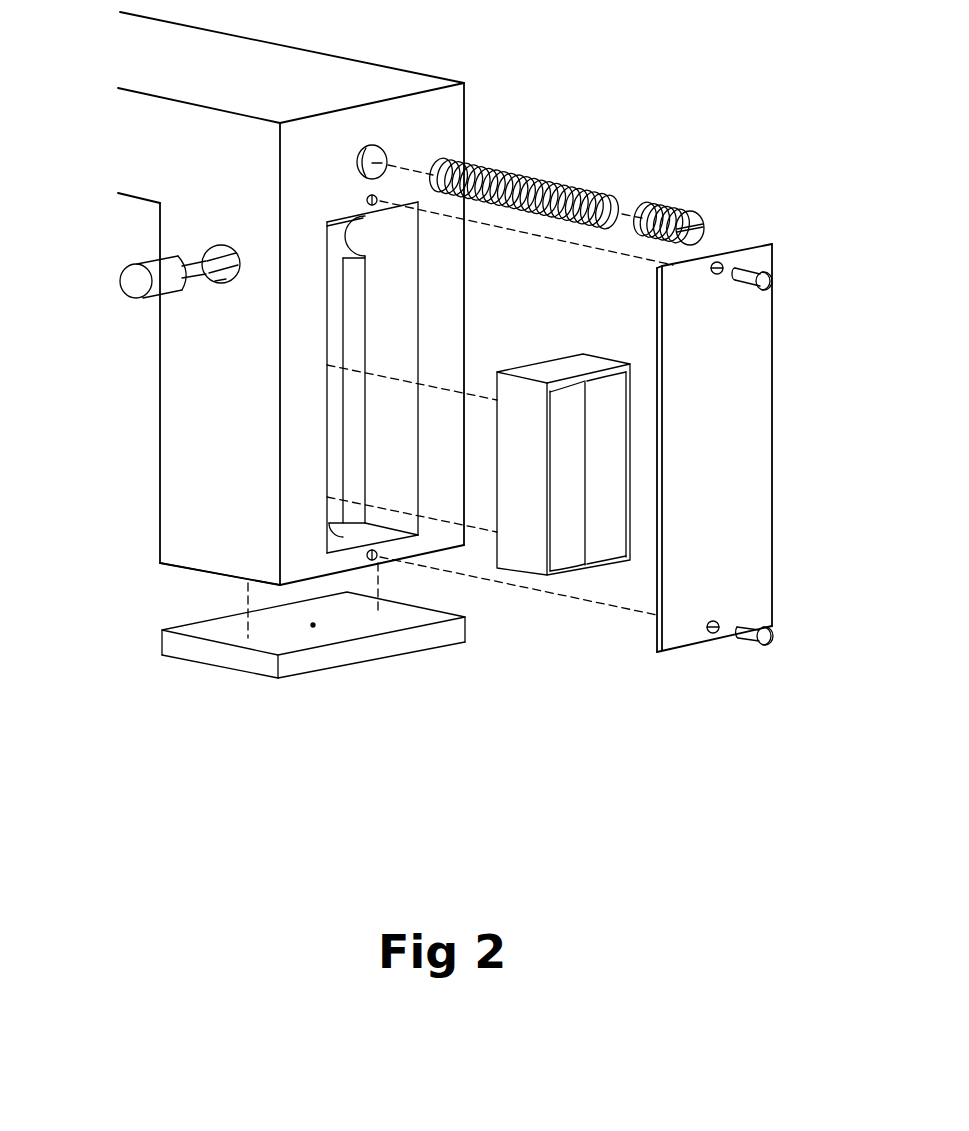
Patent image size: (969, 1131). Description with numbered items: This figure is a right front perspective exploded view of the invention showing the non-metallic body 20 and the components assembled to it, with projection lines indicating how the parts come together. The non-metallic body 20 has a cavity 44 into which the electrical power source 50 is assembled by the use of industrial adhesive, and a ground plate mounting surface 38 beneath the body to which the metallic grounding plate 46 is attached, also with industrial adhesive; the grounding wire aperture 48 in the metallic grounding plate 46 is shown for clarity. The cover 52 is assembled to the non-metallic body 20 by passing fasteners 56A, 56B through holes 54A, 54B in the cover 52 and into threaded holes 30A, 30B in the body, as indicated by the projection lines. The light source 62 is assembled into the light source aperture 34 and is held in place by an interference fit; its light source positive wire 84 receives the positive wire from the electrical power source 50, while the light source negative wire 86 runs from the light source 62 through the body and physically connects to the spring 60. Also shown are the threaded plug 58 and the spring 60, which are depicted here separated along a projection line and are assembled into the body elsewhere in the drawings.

The non-metallic body 20 is at (312, 70).
The threaded hole 30A is at (366, 200).
The threaded hole 30B is at (365, 556).
The light source aperture 34 is at (218, 245).
The ground plate mounting surface 38 is at (220, 573).
The cavity 44 is at (393, 315).
The metallic grounding plate 46 is at (217, 655).
The grounding wire aperture 48 is at (315, 627).
The electrical power source 50 is at (568, 367).
The cover 52 is at (717, 437).
The hole 54A is at (717, 275).
The hole 54B is at (713, 620).
The fastener 56A is at (773, 282).
The fastener 56B is at (777, 636).
The threaded plug 58 is at (703, 220).
The spring 60 is at (548, 178).
The light source 62 is at (137, 283).
The light source positive wire 84 is at (220, 282).
The light source negative wire 86 is at (197, 256).